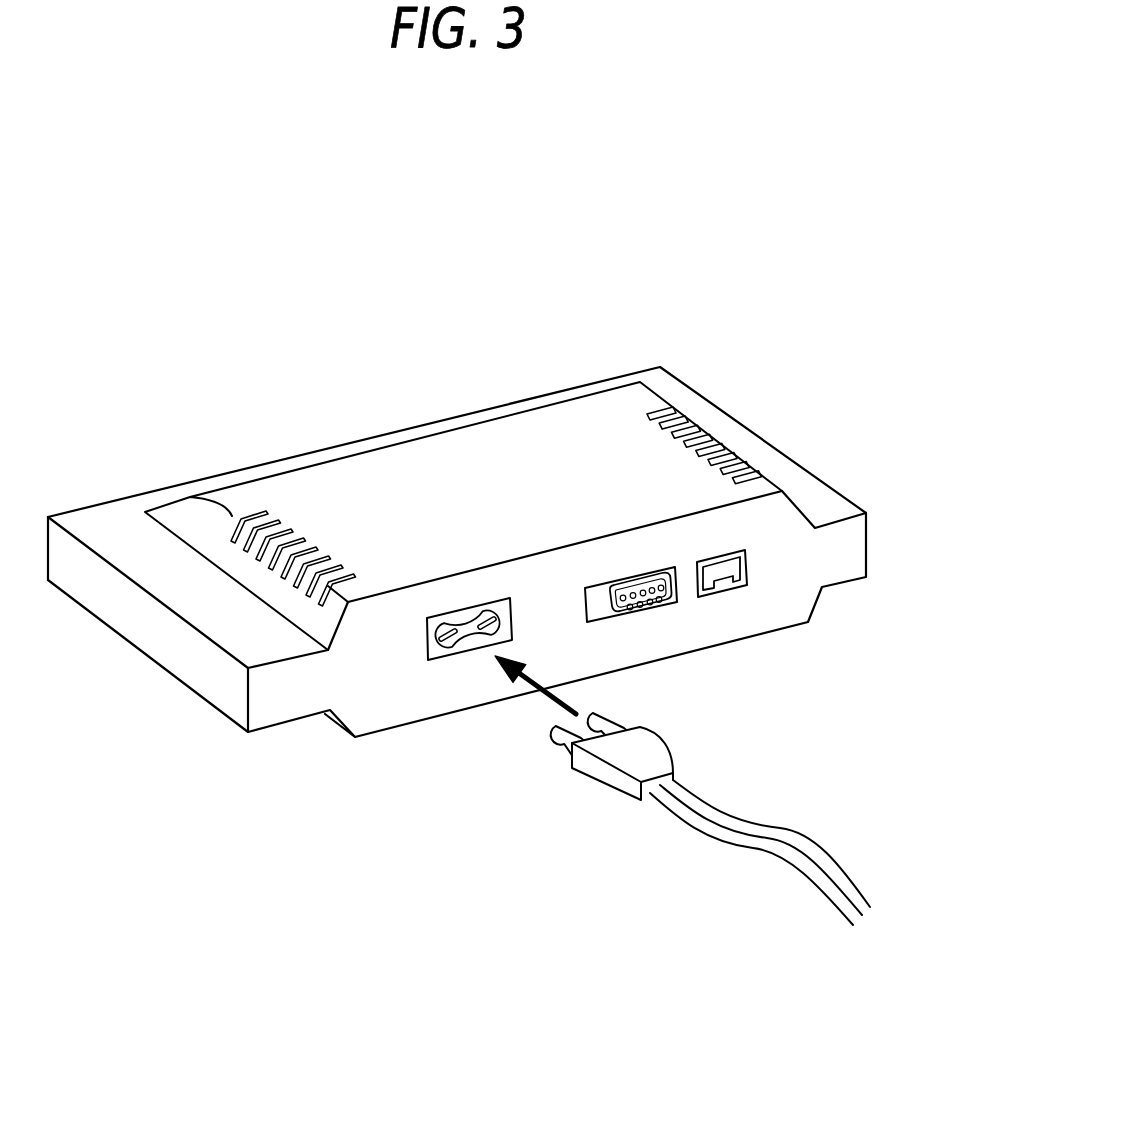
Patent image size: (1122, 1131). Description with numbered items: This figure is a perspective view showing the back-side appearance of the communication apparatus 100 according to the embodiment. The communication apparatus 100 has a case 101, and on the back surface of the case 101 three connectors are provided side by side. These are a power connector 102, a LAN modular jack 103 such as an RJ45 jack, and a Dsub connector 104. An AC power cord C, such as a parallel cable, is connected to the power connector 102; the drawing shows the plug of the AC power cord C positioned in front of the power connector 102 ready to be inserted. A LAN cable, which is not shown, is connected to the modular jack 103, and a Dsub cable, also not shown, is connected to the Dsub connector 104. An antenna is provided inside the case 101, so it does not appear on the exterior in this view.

The communication apparatus 100 is at (150, 430).
The case 101 is at (260, 467).
The power connector 102 is at (460, 660).
The LAN modular jack 103 is at (733, 585).
The Dsub connector 104 is at (665, 607).
The AC power cord C is at (668, 818).